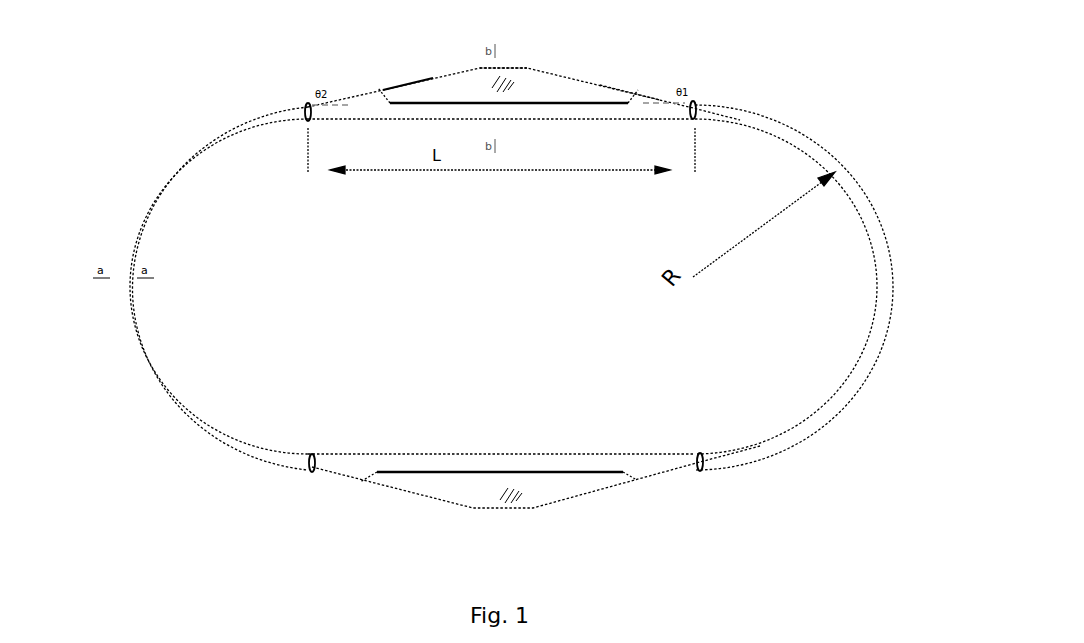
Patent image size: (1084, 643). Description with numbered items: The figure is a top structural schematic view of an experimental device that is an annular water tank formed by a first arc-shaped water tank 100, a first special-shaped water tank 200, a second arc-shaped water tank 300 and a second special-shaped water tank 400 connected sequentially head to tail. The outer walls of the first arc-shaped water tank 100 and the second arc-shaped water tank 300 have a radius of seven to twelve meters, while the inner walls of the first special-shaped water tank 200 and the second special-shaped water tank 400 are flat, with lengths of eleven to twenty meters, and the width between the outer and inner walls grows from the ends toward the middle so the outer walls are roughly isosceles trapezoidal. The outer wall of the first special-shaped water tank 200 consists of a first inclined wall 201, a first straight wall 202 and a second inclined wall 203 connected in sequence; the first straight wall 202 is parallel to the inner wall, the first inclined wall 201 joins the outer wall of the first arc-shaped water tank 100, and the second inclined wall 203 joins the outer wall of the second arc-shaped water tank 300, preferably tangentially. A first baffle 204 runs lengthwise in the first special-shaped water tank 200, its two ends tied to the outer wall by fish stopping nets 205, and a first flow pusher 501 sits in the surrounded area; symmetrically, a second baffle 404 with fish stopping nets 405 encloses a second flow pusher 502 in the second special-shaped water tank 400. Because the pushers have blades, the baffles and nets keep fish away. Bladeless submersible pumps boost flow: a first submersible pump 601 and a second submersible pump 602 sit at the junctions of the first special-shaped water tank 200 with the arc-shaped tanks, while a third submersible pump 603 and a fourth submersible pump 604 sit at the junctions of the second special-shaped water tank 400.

The first arc-shaped water tank 100 is at (815, 157).
The first special-shaped water tank 200 is at (524, 65).
The first inclined wall 201 is at (578, 77).
The first straight wall 202 is at (497, 67).
The second inclined wall 203 is at (422, 75).
The first baffle 204 is at (530, 102).
The fish stopping nets 205 is at (628, 88).
The second arc-shaped water tank 300 is at (150, 197).
The second special-shaped water tank 400 is at (536, 499).
The second baffle 404 is at (553, 474).
The fish stopping nets 405 is at (633, 481).
The first flow pusher 501 is at (482, 78).
The second flow pusher 502 is at (507, 506).
The first submersible pump 601 is at (694, 101).
The second submersible pump 602 is at (309, 101).
The third submersible pump 603 is at (312, 474).
The fourth submersible pump 604 is at (700, 472).